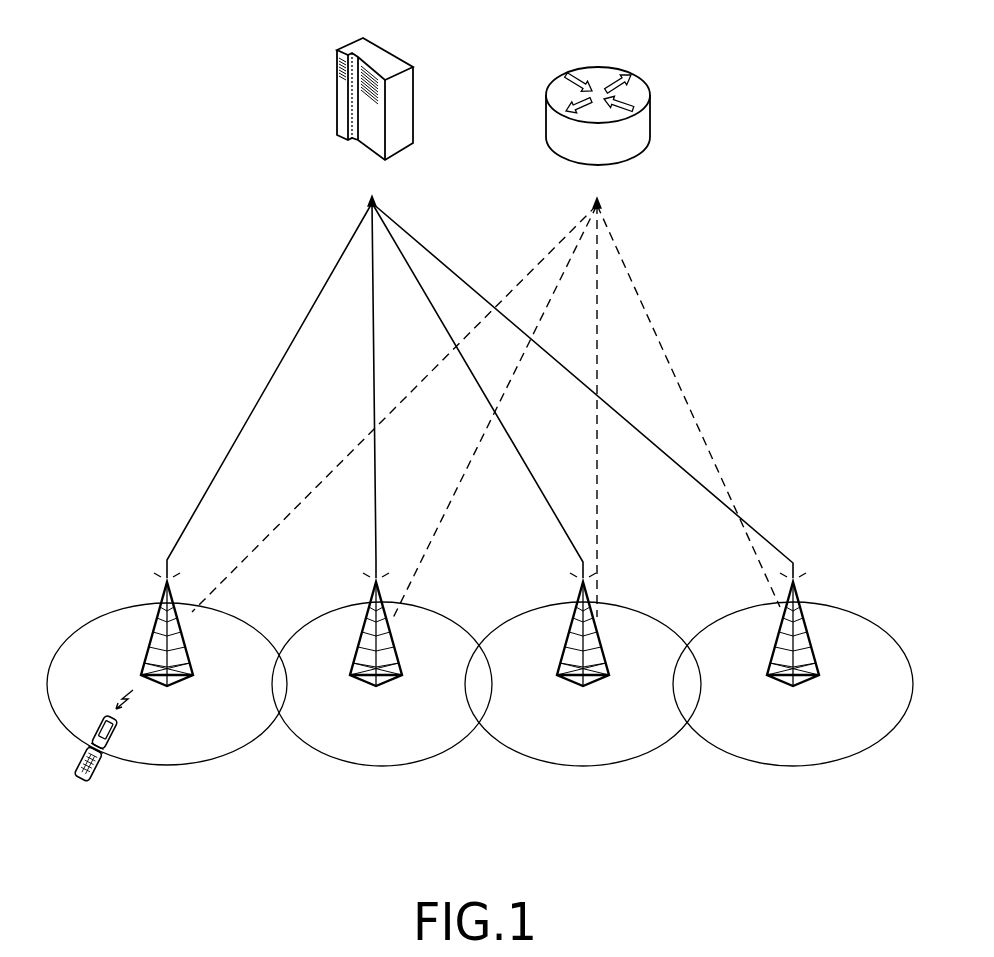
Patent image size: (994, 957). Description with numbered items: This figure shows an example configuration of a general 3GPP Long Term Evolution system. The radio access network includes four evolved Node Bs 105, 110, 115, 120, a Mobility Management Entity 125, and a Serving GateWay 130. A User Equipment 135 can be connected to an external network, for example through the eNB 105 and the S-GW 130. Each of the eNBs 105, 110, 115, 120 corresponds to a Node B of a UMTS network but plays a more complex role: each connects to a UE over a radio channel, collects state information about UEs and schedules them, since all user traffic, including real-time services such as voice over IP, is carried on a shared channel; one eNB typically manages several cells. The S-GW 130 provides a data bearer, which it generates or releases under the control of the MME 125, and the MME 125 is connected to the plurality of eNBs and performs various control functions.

The evolved Node B 105 is at (181, 639).
The evolved Node B 110 is at (390, 639).
The evolved Node B 115 is at (597, 639).
The evolved Node B 120 is at (807, 639).
The Mobility Management Entity 125 is at (383, 45).
The Serving GateWay 130 is at (597, 66).
The User Equipment 135 is at (104, 768).